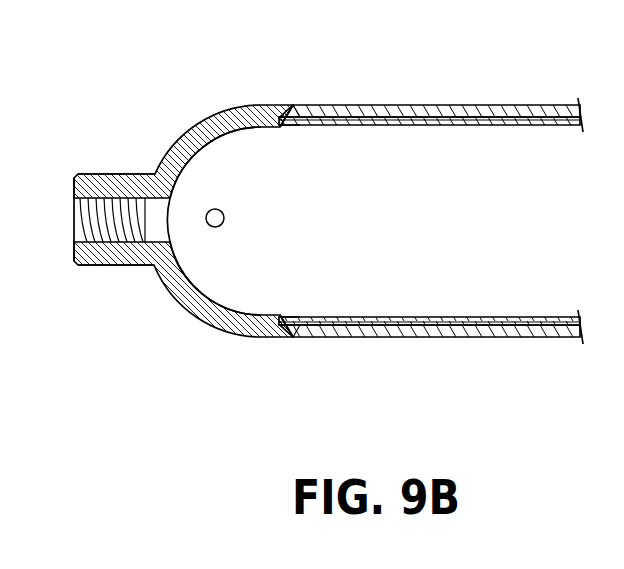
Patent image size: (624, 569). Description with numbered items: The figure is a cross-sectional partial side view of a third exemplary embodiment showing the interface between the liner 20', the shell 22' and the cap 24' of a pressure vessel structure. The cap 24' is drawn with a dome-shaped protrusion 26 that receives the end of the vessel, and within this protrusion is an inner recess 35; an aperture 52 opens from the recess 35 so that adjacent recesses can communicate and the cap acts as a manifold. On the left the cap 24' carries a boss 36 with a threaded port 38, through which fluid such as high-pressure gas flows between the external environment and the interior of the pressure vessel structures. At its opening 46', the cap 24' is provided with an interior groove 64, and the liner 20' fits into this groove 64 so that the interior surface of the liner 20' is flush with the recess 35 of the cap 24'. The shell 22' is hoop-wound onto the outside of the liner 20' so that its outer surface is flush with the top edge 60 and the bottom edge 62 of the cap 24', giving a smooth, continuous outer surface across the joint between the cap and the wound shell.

The liner 20' is at (429, 221).
The shell 22' is at (431, 222).
The cap 24' is at (183, 322).
The dome-shaped protrusion 26 is at (212, 120).
The inner recess 35 is at (200, 151).
The boss 36 is at (133, 174).
The port 38 is at (75, 222).
The opening 46' is at (351, 217).
The aperture 52 is at (217, 228).
The top edge 60 is at (291, 105).
The bottom edge 62 is at (288, 327).
The interior groove 64 is at (294, 128).